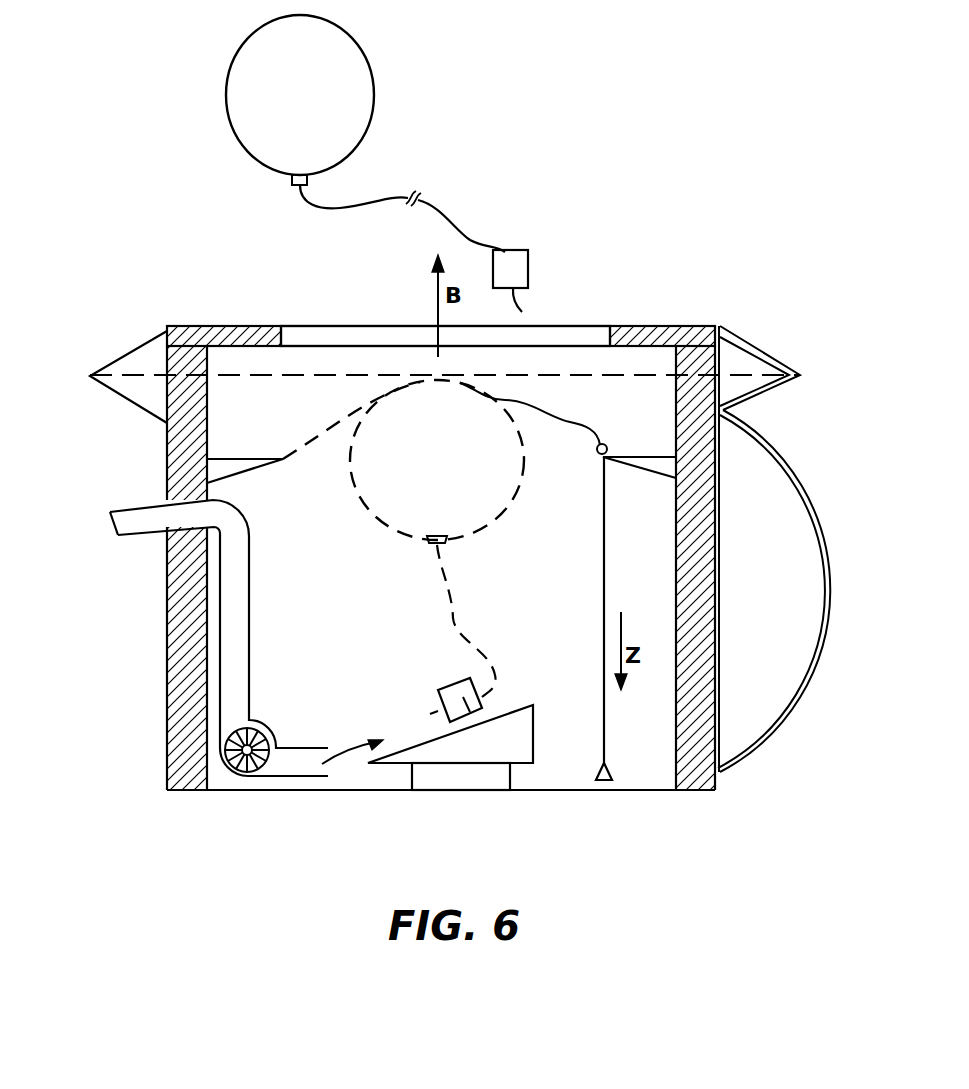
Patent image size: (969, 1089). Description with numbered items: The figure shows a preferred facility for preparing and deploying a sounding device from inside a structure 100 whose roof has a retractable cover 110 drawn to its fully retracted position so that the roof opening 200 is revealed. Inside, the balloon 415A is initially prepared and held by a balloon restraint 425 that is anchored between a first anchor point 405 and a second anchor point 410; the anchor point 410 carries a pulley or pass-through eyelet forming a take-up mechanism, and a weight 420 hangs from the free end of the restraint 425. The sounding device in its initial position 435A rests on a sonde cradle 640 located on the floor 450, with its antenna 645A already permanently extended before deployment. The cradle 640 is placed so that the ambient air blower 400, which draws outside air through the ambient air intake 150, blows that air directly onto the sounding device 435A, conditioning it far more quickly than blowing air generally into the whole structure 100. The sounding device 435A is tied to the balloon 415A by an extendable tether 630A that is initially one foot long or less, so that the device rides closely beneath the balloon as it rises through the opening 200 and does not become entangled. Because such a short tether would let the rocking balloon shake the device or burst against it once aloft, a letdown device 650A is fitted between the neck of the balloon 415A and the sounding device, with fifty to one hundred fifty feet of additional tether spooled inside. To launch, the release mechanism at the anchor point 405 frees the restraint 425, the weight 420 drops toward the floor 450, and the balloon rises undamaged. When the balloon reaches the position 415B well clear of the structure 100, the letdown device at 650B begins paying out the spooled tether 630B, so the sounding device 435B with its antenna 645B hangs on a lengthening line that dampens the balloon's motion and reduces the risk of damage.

The structure 100 is at (150, 670).
The retractable cover 110 is at (780, 730).
The ambient air intake 150 is at (133, 512).
The roof opening 200 is at (330, 335).
The ambient air blower 400 is at (252, 768).
The anchor point 405 is at (283, 456).
The anchor point 410 is at (606, 446).
The balloon 415A is at (392, 513).
The balloon 415B is at (372, 72).
The weight 420 is at (612, 772).
The balloon restraint 425 is at (603, 540).
The sounding device 435A is at (470, 724).
The sounding device 435B is at (515, 258).
The floor 450 is at (441, 827).
The sonde cradle 640 is at (527, 742).
The sounding device antenna 645A is at (430, 712).
The sounding device antenna 645B is at (520, 305).
The letdown device 650A is at (465, 550).
The letdown device 650B is at (290, 183).
The extendable tether 630A is at (445, 612).
The extendable tether 630B is at (440, 210).